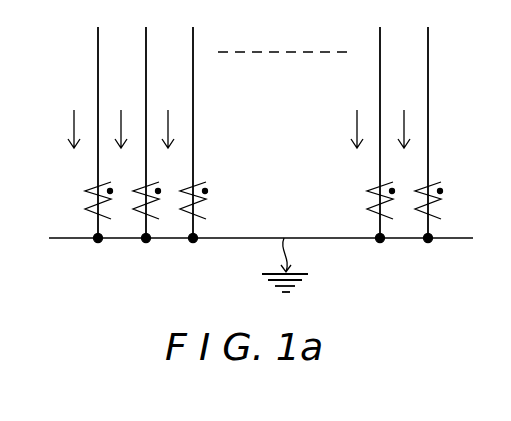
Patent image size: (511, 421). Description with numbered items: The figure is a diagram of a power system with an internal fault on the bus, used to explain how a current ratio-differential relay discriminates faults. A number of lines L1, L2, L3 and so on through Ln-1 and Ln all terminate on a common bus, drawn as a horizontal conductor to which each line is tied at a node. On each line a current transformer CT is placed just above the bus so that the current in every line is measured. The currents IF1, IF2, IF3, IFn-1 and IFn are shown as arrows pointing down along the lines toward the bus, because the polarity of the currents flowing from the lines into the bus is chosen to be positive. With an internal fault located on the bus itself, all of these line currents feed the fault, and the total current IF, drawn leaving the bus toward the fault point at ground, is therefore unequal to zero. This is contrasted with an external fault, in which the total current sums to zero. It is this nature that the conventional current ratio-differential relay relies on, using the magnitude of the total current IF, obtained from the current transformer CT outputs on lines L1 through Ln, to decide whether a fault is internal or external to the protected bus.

The line L1 is at (98, 61).
The line L2 is at (146, 61).
The line L3 is at (193, 61).
The line Ln-1 is at (380, 56).
The line Ln is at (428, 60).
The current IF1 is at (68, 114).
The current IF2 is at (117, 114).
The current IF3 is at (165, 114).
The current IFn-1 is at (343, 116).
The current IFn is at (401, 116).
The current transformer CT is at (244, 212).
The total current IF is at (290, 265).